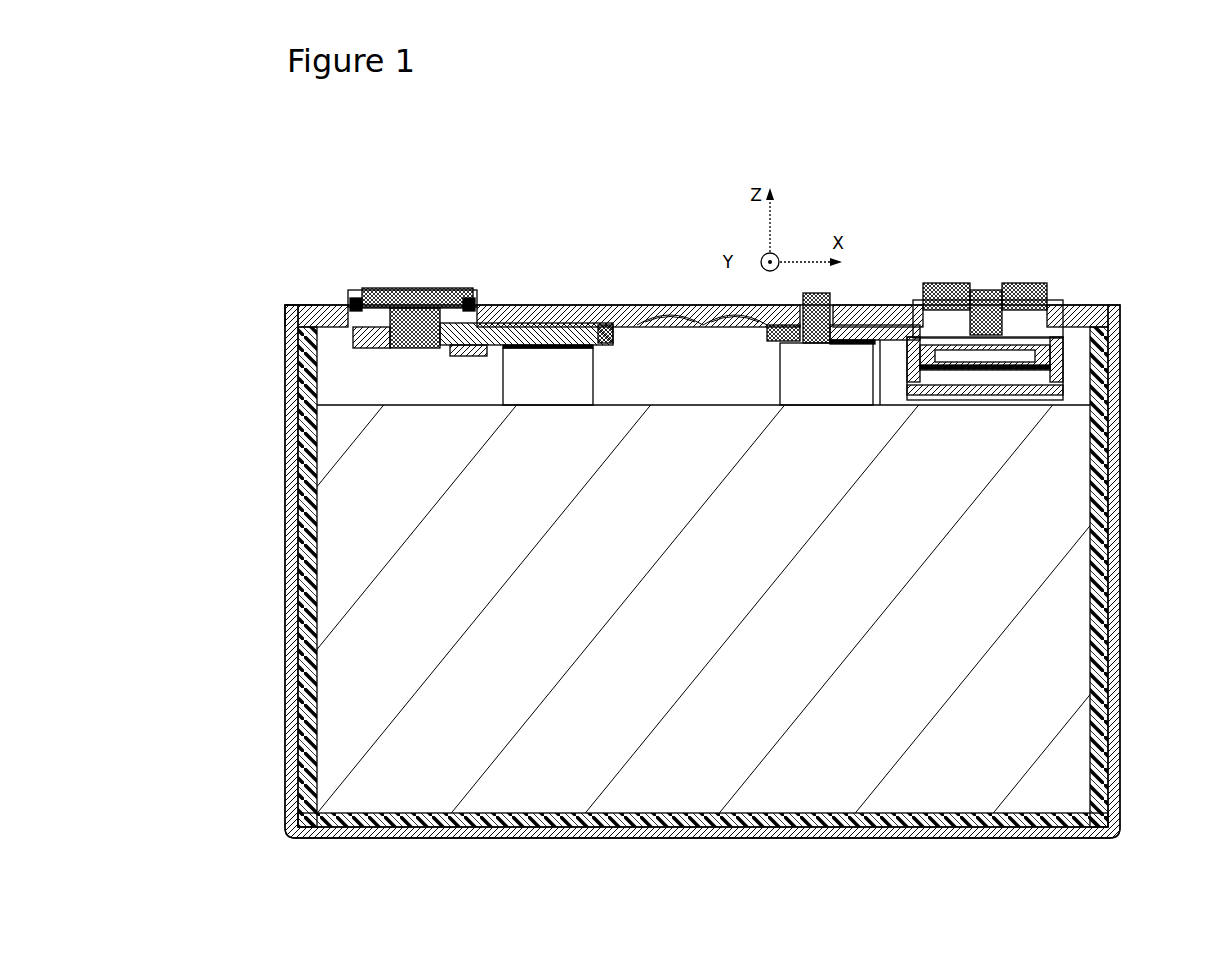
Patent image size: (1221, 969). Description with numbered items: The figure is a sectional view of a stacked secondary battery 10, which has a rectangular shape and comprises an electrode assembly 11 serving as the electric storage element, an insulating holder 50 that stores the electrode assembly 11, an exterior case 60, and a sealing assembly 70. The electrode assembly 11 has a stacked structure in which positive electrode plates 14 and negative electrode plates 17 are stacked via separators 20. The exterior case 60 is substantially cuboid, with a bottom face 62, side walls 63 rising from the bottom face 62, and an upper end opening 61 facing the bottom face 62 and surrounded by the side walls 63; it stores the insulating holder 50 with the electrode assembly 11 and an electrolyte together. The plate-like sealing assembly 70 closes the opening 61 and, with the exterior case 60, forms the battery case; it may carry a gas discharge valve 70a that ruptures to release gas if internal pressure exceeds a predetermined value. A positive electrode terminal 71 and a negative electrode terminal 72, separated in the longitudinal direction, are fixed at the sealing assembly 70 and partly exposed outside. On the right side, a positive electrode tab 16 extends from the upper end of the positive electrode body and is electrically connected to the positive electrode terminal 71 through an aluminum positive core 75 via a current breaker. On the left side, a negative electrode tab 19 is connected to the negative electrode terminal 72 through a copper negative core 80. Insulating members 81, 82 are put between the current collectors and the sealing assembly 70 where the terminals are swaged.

The stacked secondary battery 10 is at (1063, 259).
The electrode assembly 11 is at (1058, 501).
The positive electrode plate 14 is at (612, 765).
The positive electrode tab 16 is at (852, 323).
The negative electrode plate 17 is at (703, 609).
The negative electrode tab 19 is at (540, 322).
The separator 20 is at (703, 609).
The insulating holder 50 is at (1120, 645).
The exterior case 60 is at (1122, 390).
The upper end opening 61 is at (313, 307).
The bottom face 62 is at (890, 815).
The side walls 63 is at (285, 553).
The sealing assembly 70 is at (575, 307).
The gas discharge valve 70a is at (672, 312).
The positive electrode terminal 71 is at (1020, 283).
The negative electrode terminal 72 is at (418, 287).
The positive core 75 is at (873, 402).
The negative core 80 is at (395, 349).
The insulating member 81 is at (775, 342).
The insulating member 82 is at (614, 340).